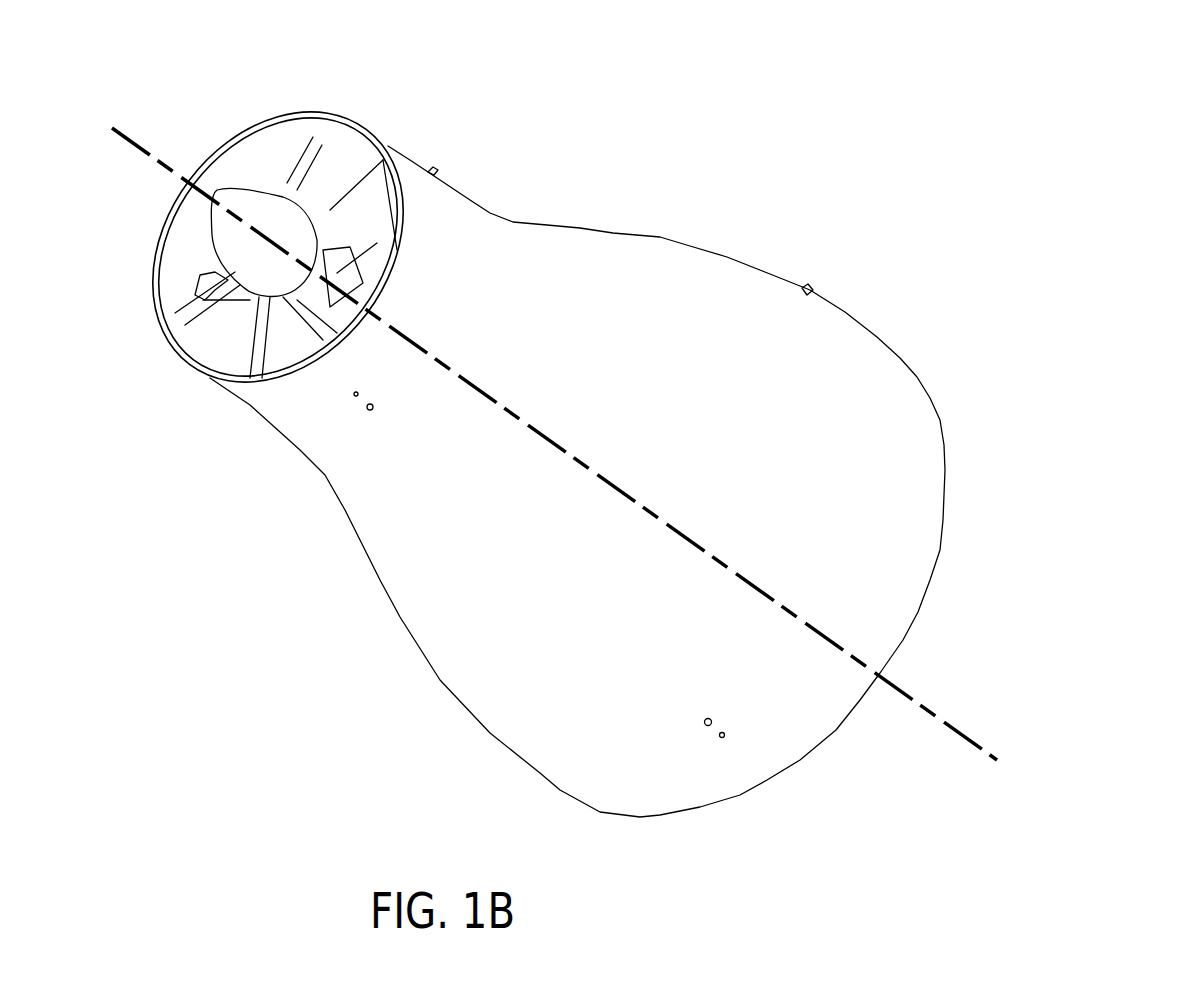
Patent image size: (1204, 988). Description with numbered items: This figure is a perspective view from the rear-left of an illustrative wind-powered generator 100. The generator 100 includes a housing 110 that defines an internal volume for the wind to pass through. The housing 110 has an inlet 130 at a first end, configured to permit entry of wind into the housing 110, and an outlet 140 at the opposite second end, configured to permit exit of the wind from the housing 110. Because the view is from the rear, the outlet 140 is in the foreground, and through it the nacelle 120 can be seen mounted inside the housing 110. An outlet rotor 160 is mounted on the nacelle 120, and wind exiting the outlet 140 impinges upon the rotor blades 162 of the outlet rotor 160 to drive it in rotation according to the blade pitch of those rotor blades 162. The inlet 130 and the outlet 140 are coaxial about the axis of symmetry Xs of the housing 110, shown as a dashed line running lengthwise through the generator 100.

The wind-powered generator 100 is at (752, 122).
The housing 110 is at (530, 512).
The nacelle 120 is at (366, 273).
The inlet 130 is at (958, 597).
The outlet 140 is at (214, 123).
The outlet rotor 160 is at (265, 205).
The rotor blades 162 is at (353, 219).
The axis of symmetry Xs is at (952, 732).